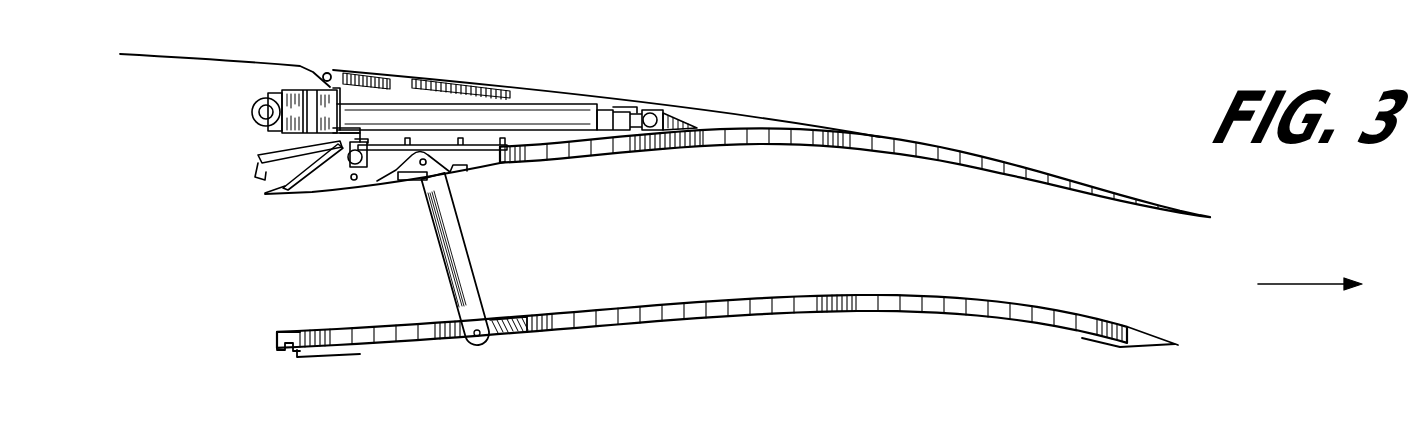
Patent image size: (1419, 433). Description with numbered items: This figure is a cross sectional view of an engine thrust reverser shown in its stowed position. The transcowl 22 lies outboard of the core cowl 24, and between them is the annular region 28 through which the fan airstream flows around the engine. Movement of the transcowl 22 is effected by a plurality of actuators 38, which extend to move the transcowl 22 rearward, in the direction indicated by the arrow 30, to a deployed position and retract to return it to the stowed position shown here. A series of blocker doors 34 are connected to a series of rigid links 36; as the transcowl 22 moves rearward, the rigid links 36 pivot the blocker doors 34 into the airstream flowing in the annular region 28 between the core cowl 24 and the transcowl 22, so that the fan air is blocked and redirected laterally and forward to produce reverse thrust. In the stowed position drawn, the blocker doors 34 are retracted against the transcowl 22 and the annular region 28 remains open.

The transcowl 22 is at (982, 160).
The core cowl 24 is at (1087, 318).
The annular region 28 is at (737, 229).
The arrow 30 is at (1292, 282).
The blocker doors 34 is at (470, 172).
The rigid links 36 is at (484, 303).
The actuators 38 is at (584, 112).